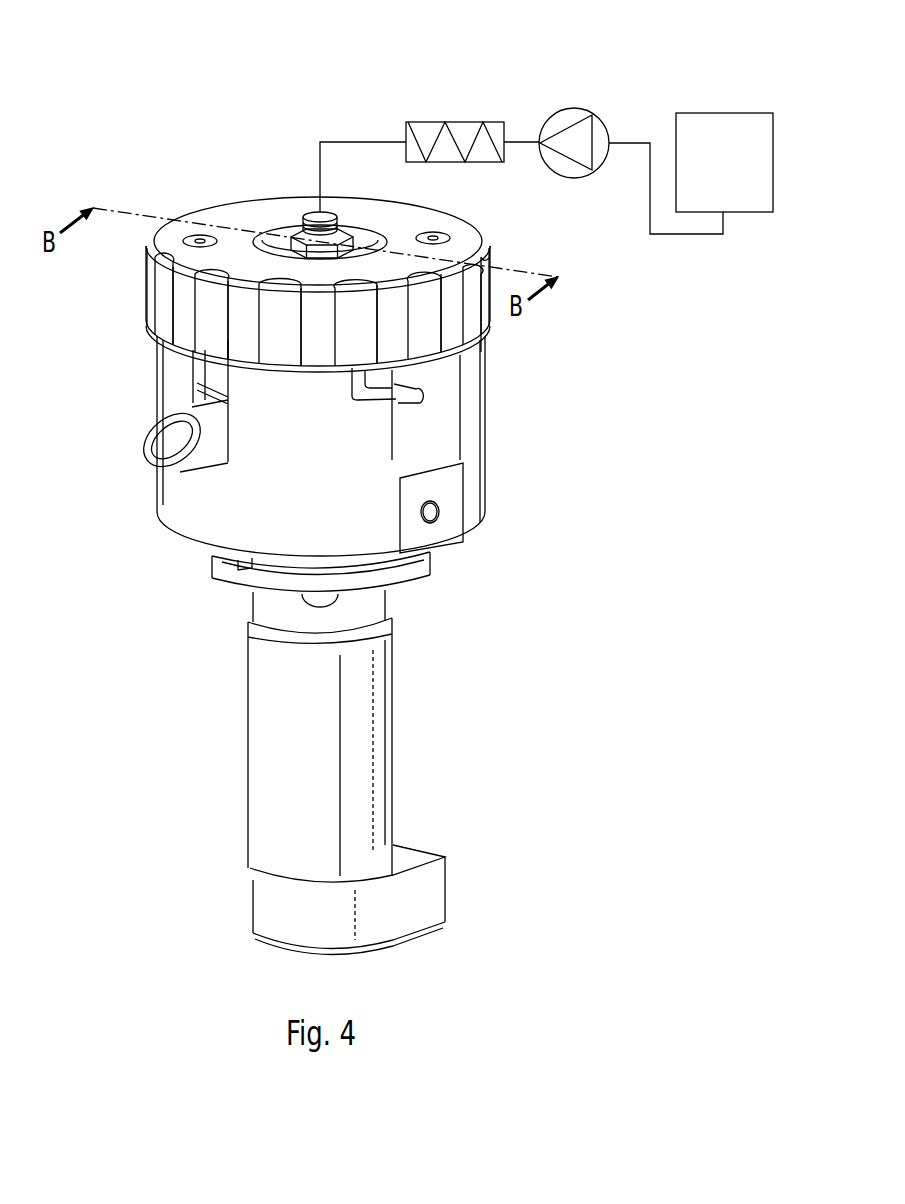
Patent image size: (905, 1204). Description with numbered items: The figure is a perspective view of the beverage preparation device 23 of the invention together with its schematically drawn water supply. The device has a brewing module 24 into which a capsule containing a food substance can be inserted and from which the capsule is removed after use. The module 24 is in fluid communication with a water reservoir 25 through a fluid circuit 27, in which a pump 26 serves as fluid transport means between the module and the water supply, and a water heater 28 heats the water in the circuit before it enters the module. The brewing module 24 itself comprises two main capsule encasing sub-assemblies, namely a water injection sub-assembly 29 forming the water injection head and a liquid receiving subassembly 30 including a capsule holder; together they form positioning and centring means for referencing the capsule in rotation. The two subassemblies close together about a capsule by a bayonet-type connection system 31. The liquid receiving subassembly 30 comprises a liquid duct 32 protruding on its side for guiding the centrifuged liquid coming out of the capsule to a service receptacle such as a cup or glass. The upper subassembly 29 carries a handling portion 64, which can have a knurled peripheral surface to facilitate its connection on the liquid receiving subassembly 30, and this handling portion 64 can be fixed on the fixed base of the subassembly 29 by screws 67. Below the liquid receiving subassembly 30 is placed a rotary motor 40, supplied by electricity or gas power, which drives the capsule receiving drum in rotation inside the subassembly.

The beverage preparation device 23 is at (566, 546).
The brewing module 24 is at (494, 373).
The water reservoir 25 is at (712, 113).
The pump 26 is at (587, 108).
The fluid circuit 27 is at (360, 138).
The water heater 28 is at (466, 120).
The water injection sub-assembly 29 is at (140, 230).
The liquid receiving subassembly 30 is at (140, 330).
The bayonet-type connection system 31 is at (434, 403).
The liquid duct 32 is at (182, 468).
The rotary motor 40 is at (399, 756).
The handling portion 64 is at (188, 196).
The screws 67 is at (450, 234).